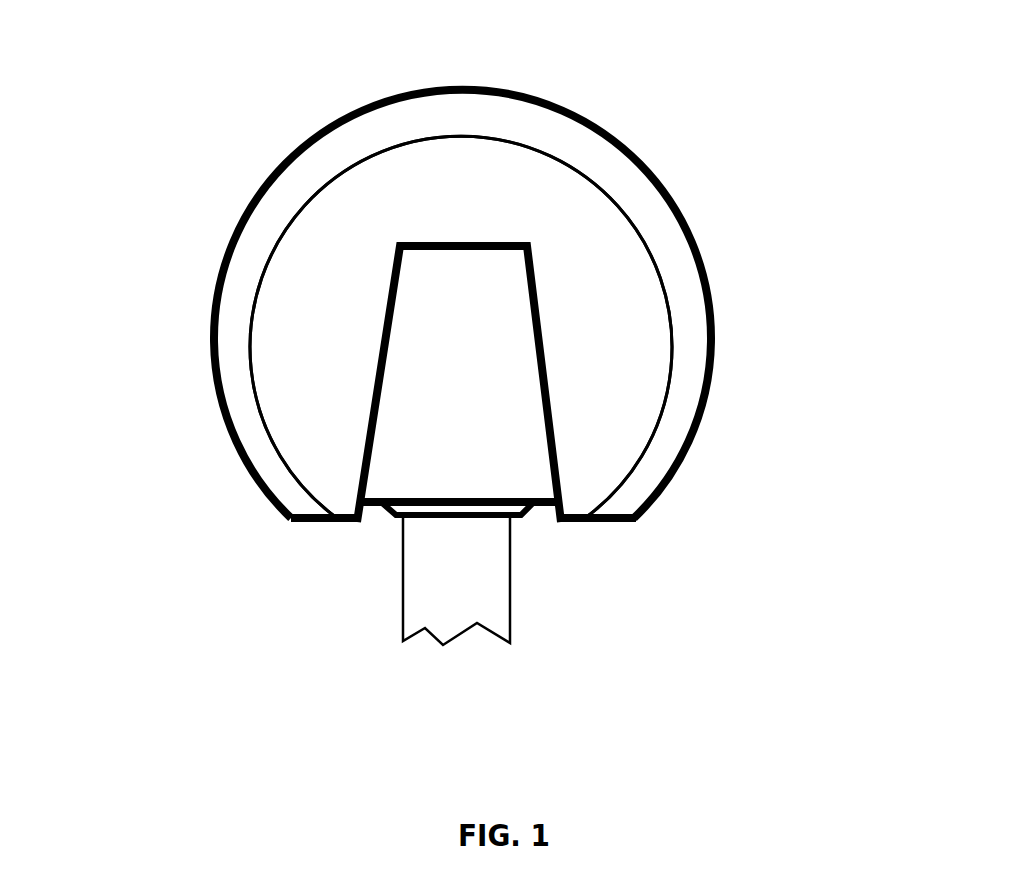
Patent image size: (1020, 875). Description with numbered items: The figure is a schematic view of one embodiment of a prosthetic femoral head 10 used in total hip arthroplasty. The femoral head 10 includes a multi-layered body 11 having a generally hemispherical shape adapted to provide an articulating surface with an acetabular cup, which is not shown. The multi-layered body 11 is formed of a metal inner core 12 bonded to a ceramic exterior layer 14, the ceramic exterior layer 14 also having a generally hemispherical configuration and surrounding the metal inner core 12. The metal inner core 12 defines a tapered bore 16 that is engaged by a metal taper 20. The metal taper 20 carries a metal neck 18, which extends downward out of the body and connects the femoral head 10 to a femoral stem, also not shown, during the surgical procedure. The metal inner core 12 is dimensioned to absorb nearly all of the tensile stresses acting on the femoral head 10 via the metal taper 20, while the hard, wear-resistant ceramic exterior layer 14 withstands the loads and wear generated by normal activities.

The femoral head 10 is at (725, 113).
The multi-layered body 11 is at (458, 85).
The metal inner core 12 is at (632, 353).
The ceramic exterior layer 14 is at (242, 257).
The tapered bore 16 is at (555, 445).
The metal neck 18 is at (430, 580).
The metal taper 20 is at (402, 422).